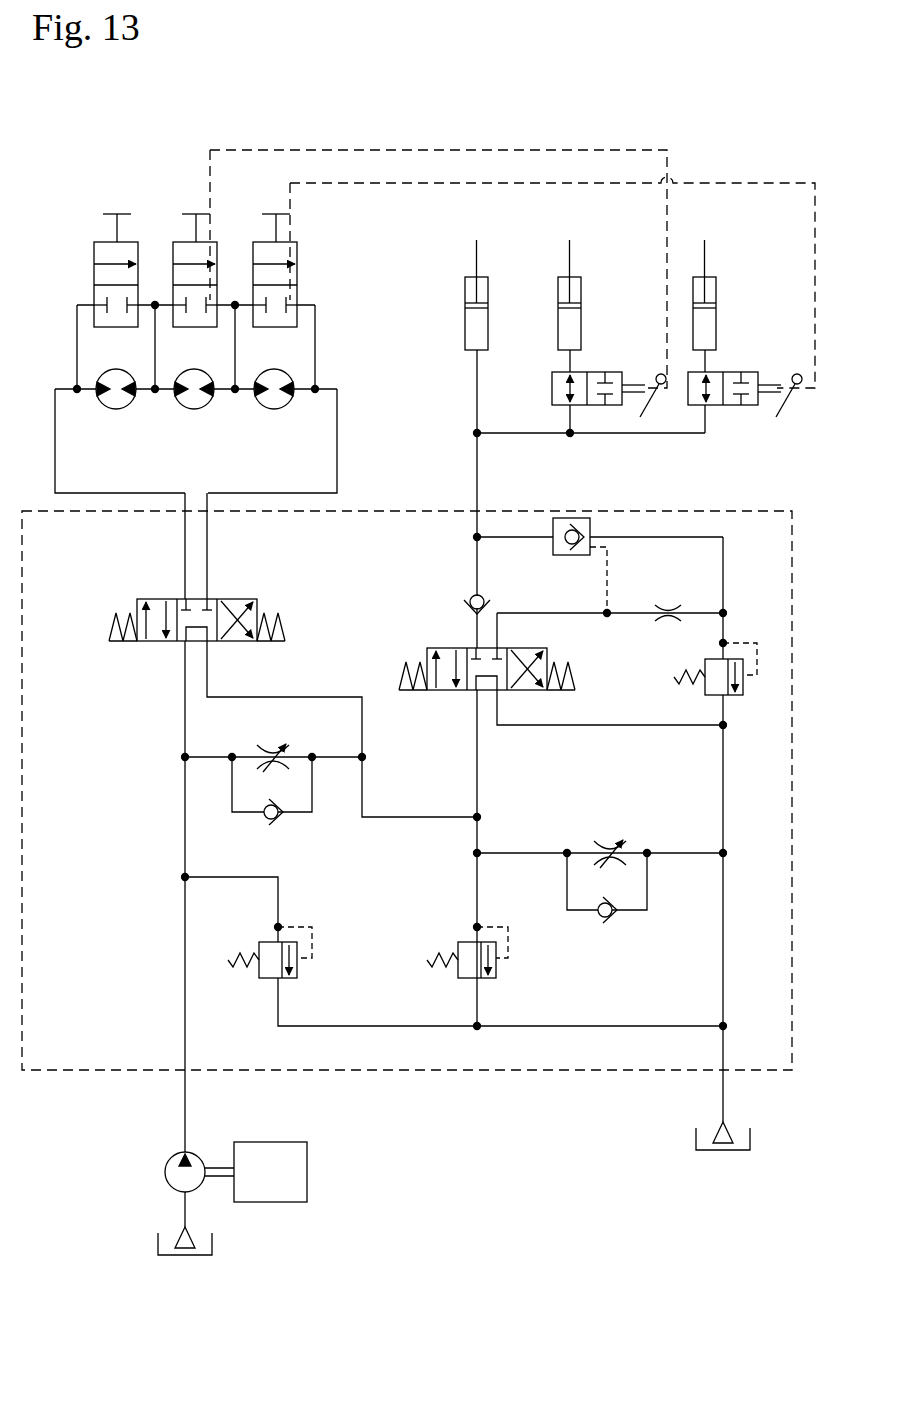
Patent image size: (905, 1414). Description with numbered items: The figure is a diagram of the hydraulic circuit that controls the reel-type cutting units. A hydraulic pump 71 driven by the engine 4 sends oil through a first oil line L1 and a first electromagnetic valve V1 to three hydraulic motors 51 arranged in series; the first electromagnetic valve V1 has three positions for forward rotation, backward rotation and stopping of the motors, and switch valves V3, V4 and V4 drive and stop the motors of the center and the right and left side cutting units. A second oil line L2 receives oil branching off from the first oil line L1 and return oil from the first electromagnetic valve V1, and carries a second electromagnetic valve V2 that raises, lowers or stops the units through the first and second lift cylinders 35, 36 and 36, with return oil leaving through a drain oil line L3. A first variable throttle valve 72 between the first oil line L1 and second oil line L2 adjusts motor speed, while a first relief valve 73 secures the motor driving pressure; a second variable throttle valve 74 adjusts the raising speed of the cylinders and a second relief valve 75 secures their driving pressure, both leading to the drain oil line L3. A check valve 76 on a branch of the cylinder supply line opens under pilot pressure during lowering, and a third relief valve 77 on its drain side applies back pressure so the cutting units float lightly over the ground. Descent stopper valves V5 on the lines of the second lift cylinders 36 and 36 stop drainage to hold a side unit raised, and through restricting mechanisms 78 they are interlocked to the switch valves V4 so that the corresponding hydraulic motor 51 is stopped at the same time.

The restricting mechanism 78 is at (490, 183).
The switch valve V3 is at (93, 249).
The switch valve V4 is at (176, 242).
The hydraulic motor 51 is at (117, 410).
The first lift cylinder 35 is at (465, 323).
The second lift cylinder 36 is at (558, 320).
The descent stopper valve V5 is at (597, 372).
The second oil line L2 is at (477, 762).
The check valve 76 is at (581, 518).
The drain oil line L3 is at (723, 920).
The third relief valve 77 is at (705, 665).
The first electromagnetic valve V1 is at (152, 599).
The second electromagnetic valve V2 is at (433, 648).
The first variable throttle valve 72 is at (273, 738).
The second variable throttle valve 74 is at (613, 834).
The first oil line L1 is at (185, 950).
The first relief valve 73 is at (267, 978).
The second relief valve 75 is at (462, 942).
The hydraulic pump 71 is at (166, 1170).
The engine 4 is at (305, 1173).